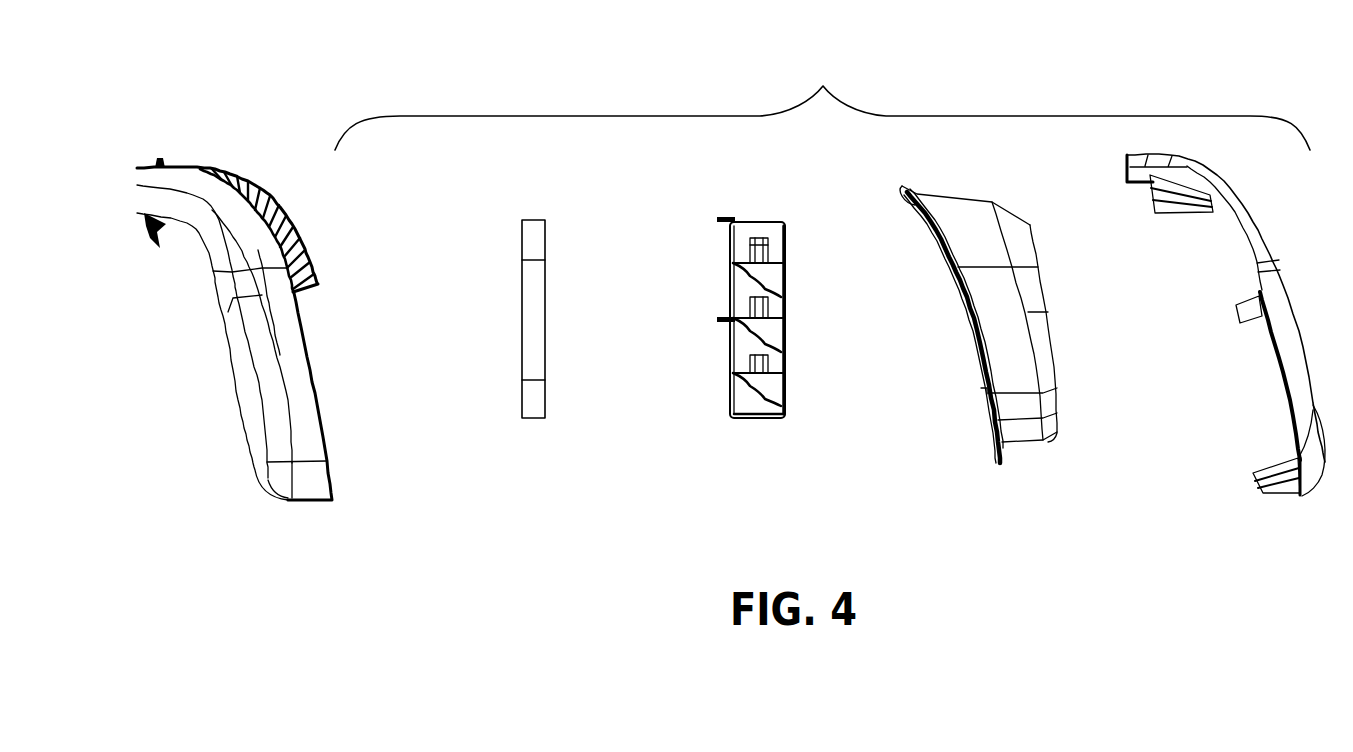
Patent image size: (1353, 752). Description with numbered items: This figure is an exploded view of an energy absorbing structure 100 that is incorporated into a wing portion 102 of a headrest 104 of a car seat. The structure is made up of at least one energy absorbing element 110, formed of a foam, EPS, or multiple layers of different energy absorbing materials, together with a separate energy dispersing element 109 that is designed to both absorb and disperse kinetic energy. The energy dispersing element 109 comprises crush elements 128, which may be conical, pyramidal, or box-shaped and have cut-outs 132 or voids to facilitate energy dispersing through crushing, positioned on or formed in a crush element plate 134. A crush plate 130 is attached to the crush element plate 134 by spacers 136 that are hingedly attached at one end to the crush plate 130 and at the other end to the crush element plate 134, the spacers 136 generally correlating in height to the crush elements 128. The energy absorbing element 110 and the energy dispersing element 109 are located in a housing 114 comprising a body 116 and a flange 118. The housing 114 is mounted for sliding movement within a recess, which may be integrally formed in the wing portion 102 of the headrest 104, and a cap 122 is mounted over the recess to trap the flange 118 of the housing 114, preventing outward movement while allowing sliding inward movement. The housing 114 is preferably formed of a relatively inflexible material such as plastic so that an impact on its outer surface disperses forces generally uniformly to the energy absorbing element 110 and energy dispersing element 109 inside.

The energy absorbing structure 100 is at (822, 104).
The wing portion 102 is at (313, 500).
The headrest 104 is at (251, 131).
The energy dispersing element 109 is at (736, 221).
The energy absorbing element 110 is at (530, 408).
The housing 114 is at (1031, 354).
The body 116 is at (1030, 428).
The flange 118 is at (998, 456).
The cap 122 is at (1250, 222).
The crush elements 128 is at (770, 250).
The crush plate 130 is at (770, 317).
The cut-outs 132 is at (770, 281).
The crush element plate 134 is at (784, 370).
The spacers 136 is at (758, 413).